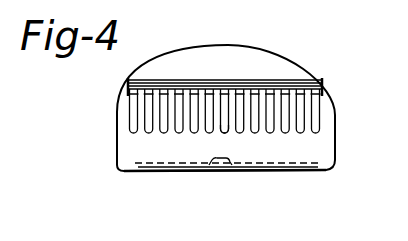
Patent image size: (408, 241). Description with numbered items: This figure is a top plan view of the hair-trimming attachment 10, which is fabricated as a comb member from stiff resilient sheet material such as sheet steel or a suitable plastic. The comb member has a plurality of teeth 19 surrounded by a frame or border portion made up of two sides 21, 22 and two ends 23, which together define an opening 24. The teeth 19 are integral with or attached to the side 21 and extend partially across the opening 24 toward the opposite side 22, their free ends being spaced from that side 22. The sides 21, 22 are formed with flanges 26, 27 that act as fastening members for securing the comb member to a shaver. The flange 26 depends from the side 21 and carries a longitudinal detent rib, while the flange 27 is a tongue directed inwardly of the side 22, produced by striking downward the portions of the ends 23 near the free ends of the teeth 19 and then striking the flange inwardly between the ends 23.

The hair-trimming attachment 10 is at (100, 155).
The teeth 19 is at (250, 87).
The side 21 is at (280, 170).
The side 22 is at (280, 54).
The ends 23 is at (117, 121).
The opening 24 is at (228, 131).
The flange 26 is at (212, 172).
The flange 27 is at (302, 82).